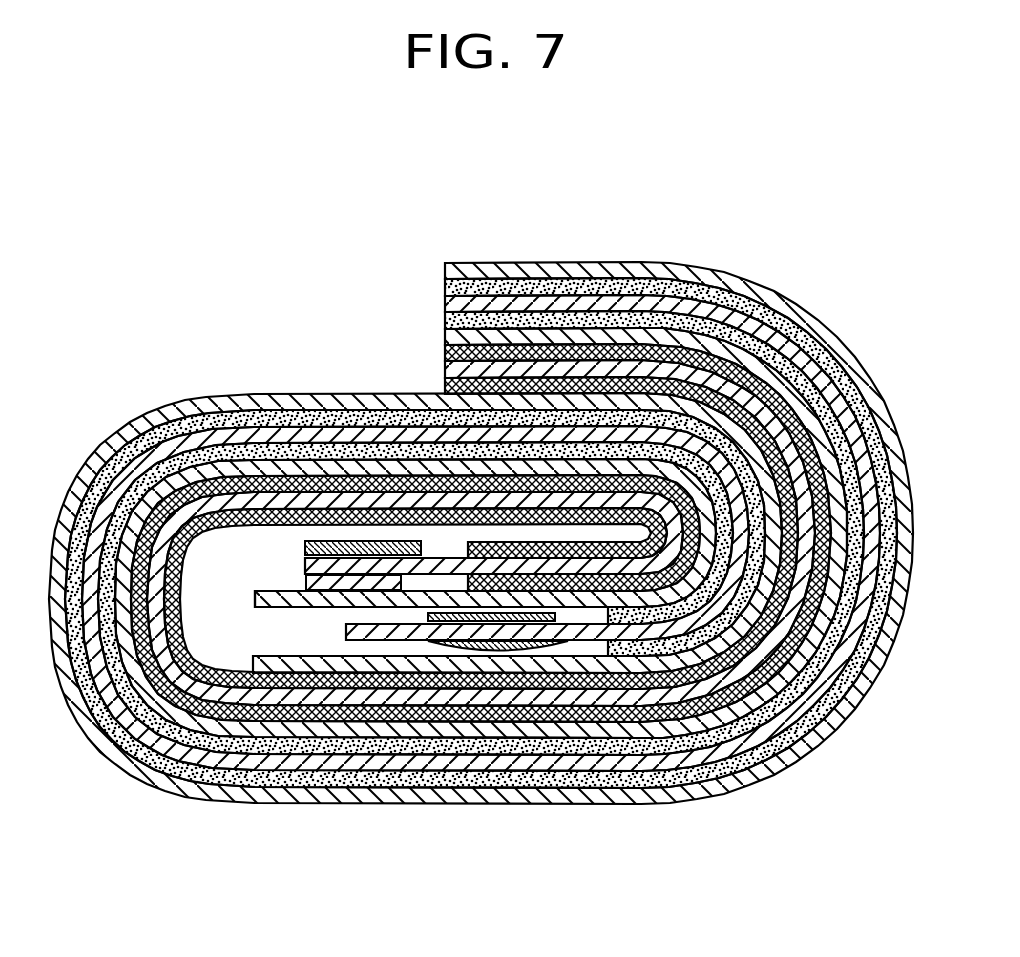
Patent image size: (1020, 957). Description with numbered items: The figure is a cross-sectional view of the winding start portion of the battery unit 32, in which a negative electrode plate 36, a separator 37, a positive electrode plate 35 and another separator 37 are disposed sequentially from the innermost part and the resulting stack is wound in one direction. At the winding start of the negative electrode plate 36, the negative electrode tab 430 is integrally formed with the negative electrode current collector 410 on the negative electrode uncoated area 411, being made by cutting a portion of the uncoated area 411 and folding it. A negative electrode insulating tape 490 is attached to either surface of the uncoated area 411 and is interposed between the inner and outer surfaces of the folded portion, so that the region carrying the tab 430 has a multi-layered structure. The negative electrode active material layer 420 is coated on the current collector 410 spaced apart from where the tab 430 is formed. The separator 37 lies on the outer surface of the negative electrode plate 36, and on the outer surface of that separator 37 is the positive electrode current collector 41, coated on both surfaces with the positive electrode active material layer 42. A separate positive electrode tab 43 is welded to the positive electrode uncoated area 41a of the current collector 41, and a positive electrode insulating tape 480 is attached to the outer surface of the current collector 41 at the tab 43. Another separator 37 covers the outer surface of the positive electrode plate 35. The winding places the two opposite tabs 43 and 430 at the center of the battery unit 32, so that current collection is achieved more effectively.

The battery unit 32 is at (243, 243).
The negative electrode plate 36 is at (548, 207).
The negative electrode current collector 410 is at (487, 533).
The negative electrode active material layer 420 is at (527, 540).
The negative electrode uncoated area 411 is at (398, 533).
The negative electrode insulating tape 490 is at (355, 533).
The negative electrode tab 430 is at (244, 405).
The positive electrode uncoated area 41a is at (405, 590).
The positive electrode tab 43 is at (455, 612).
The positive electrode insulating tape 480 is at (508, 643).
The separator 37 is at (603, 690).
The positive electrode current collector 41 is at (630, 623).
The positive electrode active material layer 42 is at (706, 636).
The positive electrode plate 35 is at (700, 888).